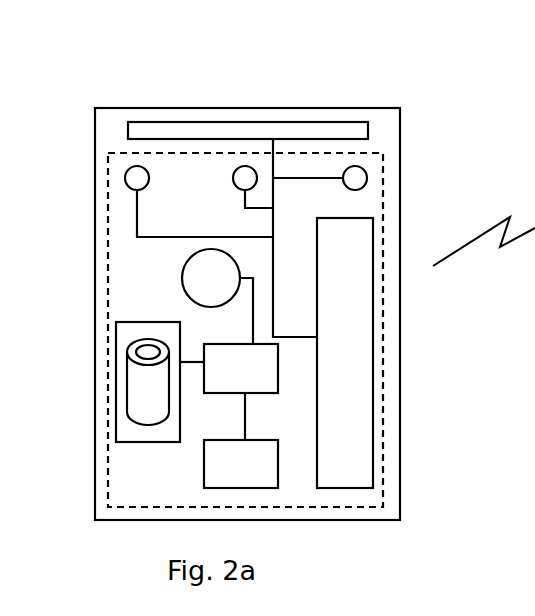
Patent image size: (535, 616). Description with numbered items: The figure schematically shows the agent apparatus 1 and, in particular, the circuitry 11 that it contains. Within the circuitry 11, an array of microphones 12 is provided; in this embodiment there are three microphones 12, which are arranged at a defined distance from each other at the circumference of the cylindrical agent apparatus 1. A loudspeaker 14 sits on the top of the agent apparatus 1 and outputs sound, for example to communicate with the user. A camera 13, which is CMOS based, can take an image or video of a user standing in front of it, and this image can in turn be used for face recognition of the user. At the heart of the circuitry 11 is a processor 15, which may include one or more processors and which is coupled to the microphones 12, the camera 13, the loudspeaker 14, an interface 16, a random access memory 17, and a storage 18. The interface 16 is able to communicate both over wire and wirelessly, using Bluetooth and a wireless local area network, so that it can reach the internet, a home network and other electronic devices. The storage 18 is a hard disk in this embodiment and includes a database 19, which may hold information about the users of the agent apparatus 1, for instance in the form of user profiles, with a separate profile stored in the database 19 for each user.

The agent apparatus 1 is at (241, 53).
The circuitry 11 is at (383, 477).
The microphones 12 is at (233, 178).
The camera 13 is at (182, 268).
The loudspeaker 14 is at (309, 108).
The processor 15 is at (230, 378).
The interface 16 is at (333, 351).
The random access memory (RAM) 17 is at (230, 473).
The storage 18 is at (116, 431).
The database 19 is at (125, 366).